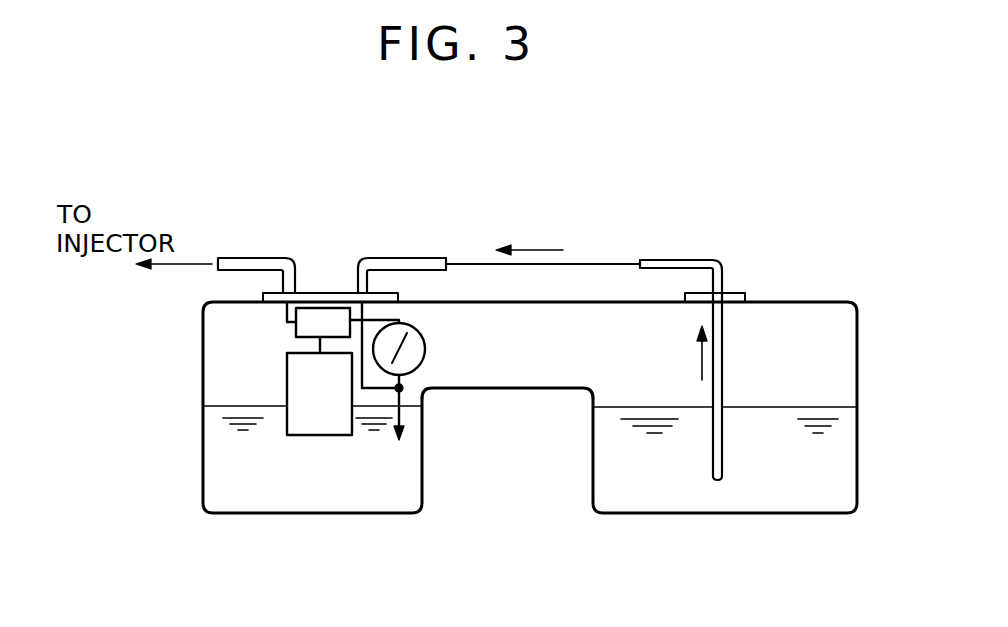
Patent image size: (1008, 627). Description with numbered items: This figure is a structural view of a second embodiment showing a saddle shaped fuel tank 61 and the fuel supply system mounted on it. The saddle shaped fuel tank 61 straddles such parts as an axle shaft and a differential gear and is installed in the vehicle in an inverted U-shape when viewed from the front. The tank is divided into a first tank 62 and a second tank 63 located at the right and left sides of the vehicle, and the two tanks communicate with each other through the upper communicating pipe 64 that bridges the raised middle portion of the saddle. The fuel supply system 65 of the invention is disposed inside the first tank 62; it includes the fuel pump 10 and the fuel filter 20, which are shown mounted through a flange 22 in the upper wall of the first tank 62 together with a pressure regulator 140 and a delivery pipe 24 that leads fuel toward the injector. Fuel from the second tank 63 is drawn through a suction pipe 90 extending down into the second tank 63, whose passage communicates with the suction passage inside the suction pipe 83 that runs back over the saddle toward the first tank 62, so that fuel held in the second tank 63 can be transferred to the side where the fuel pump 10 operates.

The fuel pump 10 is at (287, 374).
The fuel filter 20 is at (296, 321).
The mounting flange 22 is at (333, 292).
The fuel supply pipe to injector 24 is at (240, 257).
The saddle shaped fuel tank 61 is at (800, 300).
The first tank 62 is at (305, 492).
The second tank 63 is at (677, 493).
The upper communicating pipe 64 is at (532, 375).
The fuel supply system 65 is at (278, 255).
The suction pipe 83 is at (420, 257).
The suction pipe 90 is at (722, 352).
The pressure regulator (P/R) 140 is at (417, 364).